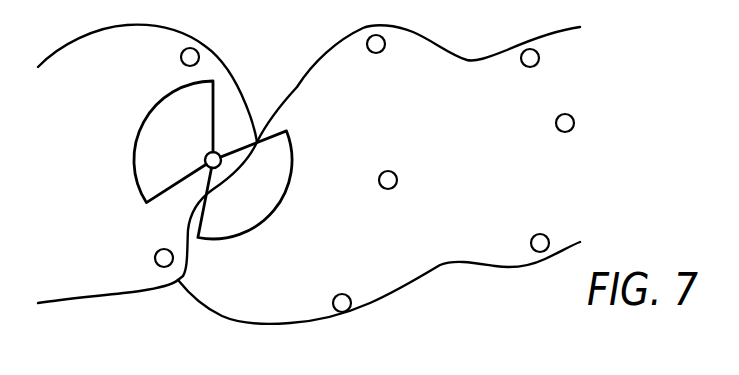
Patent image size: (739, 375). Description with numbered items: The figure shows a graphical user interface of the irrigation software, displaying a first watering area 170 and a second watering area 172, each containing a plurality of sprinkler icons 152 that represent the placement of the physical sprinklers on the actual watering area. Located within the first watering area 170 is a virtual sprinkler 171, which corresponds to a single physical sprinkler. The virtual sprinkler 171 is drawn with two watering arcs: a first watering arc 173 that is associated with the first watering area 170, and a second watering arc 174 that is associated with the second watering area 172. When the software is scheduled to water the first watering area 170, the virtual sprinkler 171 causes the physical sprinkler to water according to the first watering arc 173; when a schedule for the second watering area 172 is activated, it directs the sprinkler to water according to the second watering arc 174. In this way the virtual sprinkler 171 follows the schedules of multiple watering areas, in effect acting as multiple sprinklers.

The sprinkler icons 152 is at (192, 48).
The first watering area 170 is at (106, 189).
The virtual sprinkler 171 is at (219, 156).
The second watering area 172 is at (457, 189).
The first watering arc 173 is at (194, 154).
The second watering arc 174 is at (271, 204).